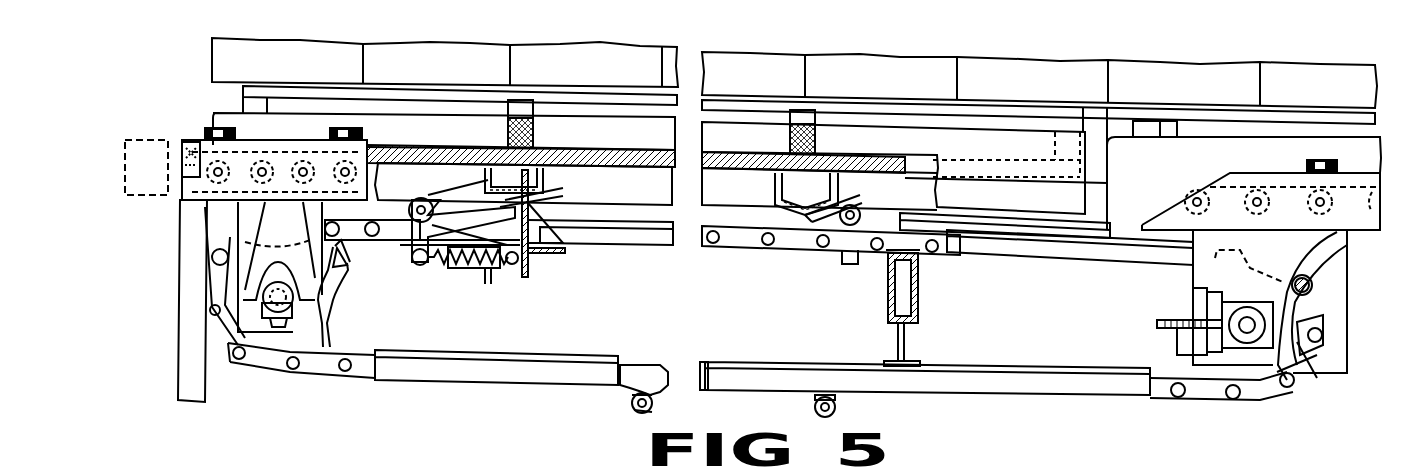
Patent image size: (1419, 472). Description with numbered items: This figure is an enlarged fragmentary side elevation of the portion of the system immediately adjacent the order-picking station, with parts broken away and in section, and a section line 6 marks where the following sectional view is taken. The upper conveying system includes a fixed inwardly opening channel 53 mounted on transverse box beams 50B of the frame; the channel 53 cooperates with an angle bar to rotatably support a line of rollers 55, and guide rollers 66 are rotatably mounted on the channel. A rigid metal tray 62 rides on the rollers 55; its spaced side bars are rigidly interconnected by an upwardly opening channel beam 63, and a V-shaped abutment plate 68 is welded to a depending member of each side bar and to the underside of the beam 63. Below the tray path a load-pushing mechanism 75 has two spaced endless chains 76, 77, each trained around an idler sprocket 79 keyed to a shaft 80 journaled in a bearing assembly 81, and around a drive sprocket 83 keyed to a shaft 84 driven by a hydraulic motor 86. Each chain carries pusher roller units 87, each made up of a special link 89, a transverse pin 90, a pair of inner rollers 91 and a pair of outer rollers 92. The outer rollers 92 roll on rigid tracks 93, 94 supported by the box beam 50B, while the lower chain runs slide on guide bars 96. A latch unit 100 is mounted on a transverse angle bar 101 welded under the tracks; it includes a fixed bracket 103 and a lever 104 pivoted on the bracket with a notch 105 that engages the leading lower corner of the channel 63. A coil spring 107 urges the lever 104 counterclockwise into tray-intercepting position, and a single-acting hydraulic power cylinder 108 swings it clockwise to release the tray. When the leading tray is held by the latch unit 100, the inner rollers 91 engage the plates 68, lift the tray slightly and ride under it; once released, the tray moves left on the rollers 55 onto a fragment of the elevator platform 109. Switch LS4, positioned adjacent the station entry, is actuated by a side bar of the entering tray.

The section line 6- 6 is at (403, 29).
The transverse box beam 50B is at (918, 310).
The inwardly opening channel 53 is at (362, 150).
The rollers 55 is at (200, 238).
The rigid metal tray 62 is at (1180, 140).
The upwardly opening channel beam 63 is at (545, 182).
The rollers 66 is at (330, 132).
The V-shaped abutment plate 68 is at (772, 200).
The load-pushing mechanism 75 is at (805, 258).
The endless chain 76 is at (1320, 275).
The endless chain 77 is at (278, 368).
The idler sprocket 79 is at (1297, 372).
The shaft 80 is at (1247, 324).
The bearing assembly 81 is at (1217, 297).
The drive sprocket 83 is at (347, 268).
The shaft 84 is at (292, 299).
The hydraulic motor 86 is at (328, 320).
The pusher roller unit 87 is at (658, 403).
The special link 89 is at (645, 366).
The transverse pin 90 is at (654, 408).
The inner rollers 91 is at (630, 397).
The outer rollers 92 is at (634, 408).
The rigid track 93 is at (942, 232).
The rigid track 94 is at (618, 242).
The guide bars 96 is at (447, 362).
The latch unit 100 is at (438, 196).
The transverse angle bar 101 is at (545, 258).
The fixed bracket 103 is at (542, 202).
The lever 104 is at (490, 208).
The notch 105 is at (500, 166).
The coil spring 107 is at (470, 270).
The single-acting hydraulic power cylinder 108 is at (489, 278).
The platform 109 is at (170, 135).
The switch LS-4 LS4 is at (182, 200).